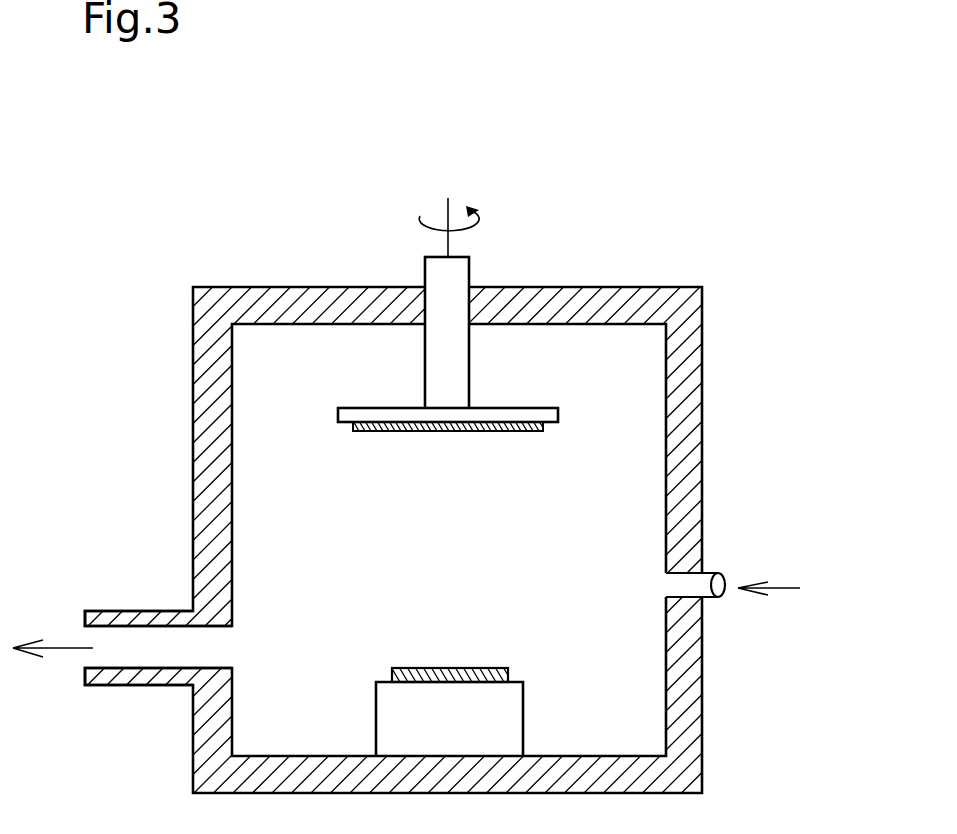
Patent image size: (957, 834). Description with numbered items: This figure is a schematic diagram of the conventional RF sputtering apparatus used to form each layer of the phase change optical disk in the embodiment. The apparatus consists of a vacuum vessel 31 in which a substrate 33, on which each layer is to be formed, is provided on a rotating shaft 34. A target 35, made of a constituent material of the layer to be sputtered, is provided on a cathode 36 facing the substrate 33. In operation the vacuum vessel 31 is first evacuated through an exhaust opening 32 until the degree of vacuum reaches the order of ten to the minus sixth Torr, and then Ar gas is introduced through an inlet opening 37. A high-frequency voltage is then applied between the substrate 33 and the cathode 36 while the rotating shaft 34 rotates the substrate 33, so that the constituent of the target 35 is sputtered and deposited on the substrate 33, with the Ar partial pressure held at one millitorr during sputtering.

The vacuum vessel 31 is at (575, 287).
The exhaust opening 32 is at (122, 667).
The substrate 33 is at (478, 432).
The rotating shaft 34 is at (448, 209).
The target 35 is at (440, 668).
The cathode 36 is at (510, 718).
The inlet opening 37 is at (755, 584).